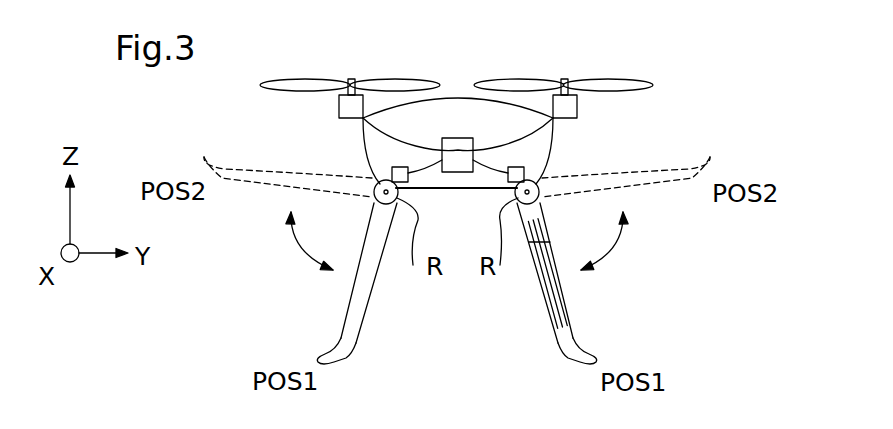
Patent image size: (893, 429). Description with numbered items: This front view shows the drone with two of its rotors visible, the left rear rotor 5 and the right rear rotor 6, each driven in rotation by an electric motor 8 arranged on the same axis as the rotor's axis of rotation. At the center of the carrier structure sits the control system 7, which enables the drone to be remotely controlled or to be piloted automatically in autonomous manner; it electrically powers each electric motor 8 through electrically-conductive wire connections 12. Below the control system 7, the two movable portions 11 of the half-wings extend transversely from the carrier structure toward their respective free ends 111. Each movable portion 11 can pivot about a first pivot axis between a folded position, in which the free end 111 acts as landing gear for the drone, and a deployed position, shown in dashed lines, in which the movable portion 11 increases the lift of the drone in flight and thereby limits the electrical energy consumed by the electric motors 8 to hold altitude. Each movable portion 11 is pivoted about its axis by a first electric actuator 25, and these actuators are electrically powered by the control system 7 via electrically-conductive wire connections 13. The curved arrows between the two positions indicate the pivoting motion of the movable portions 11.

The left rear rotor 5 is at (607, 80).
The right rear rotor 6 is at (292, 80).
The control system 7 is at (458, 138).
The electric motor 8 is at (339, 107).
The movable portion 11 is at (326, 313).
The electrically-conductive wire connection 12 is at (508, 140).
The electrically-conductive wire connection 13 is at (487, 189).
The first electric actuator 25 is at (397, 167).
The free end 111 is at (333, 364).